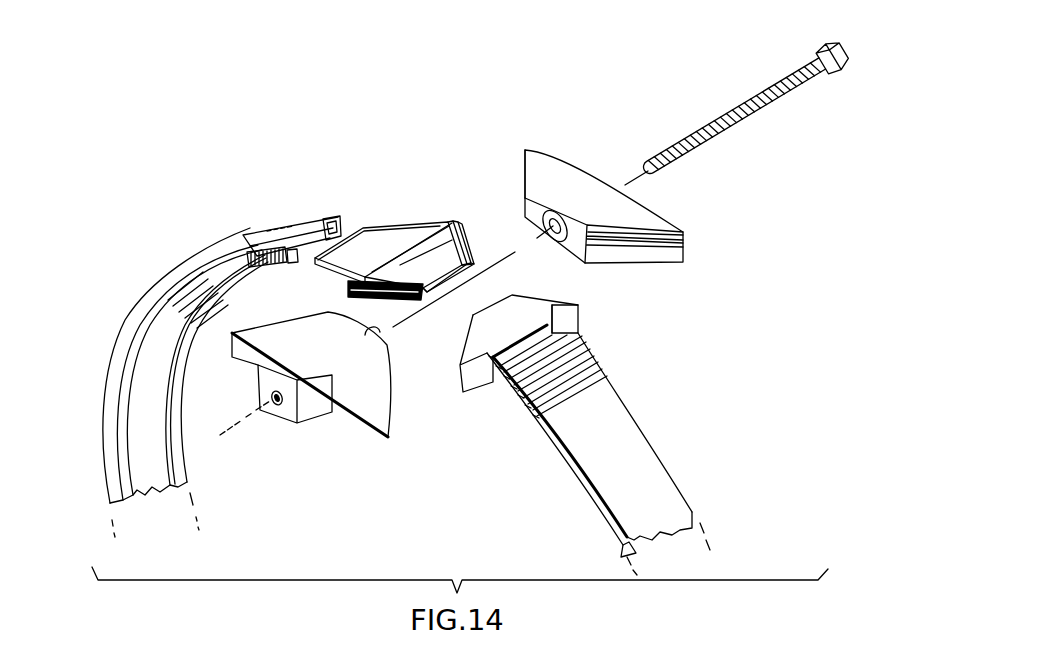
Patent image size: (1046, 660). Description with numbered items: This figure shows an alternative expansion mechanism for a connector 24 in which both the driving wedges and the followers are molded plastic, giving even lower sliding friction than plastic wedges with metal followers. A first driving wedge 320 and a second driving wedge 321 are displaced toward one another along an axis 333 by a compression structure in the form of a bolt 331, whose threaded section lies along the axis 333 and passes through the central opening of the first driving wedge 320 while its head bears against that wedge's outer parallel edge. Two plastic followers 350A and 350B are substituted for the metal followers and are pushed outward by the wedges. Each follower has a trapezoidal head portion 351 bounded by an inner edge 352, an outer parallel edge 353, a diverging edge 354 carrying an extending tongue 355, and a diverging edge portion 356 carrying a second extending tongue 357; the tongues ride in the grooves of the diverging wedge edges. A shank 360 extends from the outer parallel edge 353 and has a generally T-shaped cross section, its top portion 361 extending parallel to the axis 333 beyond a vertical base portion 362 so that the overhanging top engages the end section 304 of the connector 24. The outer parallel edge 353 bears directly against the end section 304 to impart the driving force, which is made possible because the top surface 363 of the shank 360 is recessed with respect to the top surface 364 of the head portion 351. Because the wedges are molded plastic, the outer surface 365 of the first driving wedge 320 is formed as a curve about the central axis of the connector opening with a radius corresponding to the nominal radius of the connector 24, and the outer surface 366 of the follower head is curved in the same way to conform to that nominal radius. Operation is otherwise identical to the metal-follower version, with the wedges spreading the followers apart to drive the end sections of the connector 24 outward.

The connector 24 is at (282, 492).
The end section 304 is at (253, 232).
The first driving wedge 320 is at (575, 160).
The second driving wedge 321 is at (380, 385).
The bolt 331 is at (741, 96).
The axis 333 is at (242, 420).
The plastic follower 350A is at (348, 218).
The plastic follower 350B is at (587, 331).
The trapezoidal head portion 351 is at (417, 250).
The inner edge 352 is at (440, 282).
The outer parallel edge 353 is at (445, 225).
The diverging edge 354 is at (452, 233).
The extending tongue 355 is at (460, 236).
The diverging edge portion 356 is at (350, 282).
The extending tongue 357 is at (348, 292).
The shank 360 is at (367, 227).
The top portion 361 is at (330, 220).
The vertical base portion 362 is at (283, 268).
The top surface of the shank 363 is at (400, 238).
The top surface of the head portion 364 is at (462, 248).
The outer surface 365 is at (592, 183).
The outer surface 366 is at (613, 407).